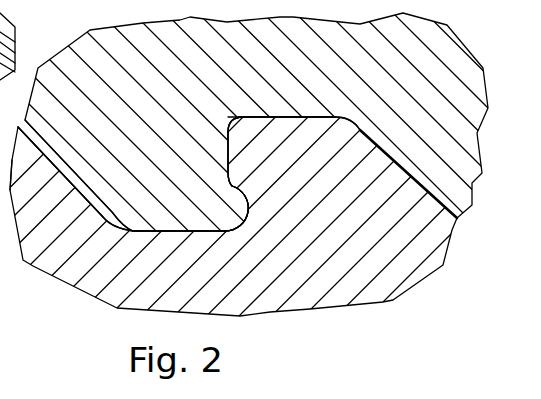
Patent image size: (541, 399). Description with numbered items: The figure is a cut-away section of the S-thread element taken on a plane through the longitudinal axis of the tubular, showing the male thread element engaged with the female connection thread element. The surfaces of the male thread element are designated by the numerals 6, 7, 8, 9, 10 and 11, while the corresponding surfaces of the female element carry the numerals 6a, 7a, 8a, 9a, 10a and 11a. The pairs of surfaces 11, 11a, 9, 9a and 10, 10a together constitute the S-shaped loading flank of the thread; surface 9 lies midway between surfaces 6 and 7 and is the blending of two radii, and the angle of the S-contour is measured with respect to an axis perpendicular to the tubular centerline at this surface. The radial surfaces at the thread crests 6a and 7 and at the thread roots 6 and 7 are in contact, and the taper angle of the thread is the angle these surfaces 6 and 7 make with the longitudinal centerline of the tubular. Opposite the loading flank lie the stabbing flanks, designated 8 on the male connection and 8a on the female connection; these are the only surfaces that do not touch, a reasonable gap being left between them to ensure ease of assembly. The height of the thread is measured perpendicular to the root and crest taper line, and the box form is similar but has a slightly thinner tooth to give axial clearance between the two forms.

The thread root surface of male thread element 6 is at (198, 232).
The thread crest surface of female thread element 6a is at (186, 231).
The thread crest surface of male thread element 7 is at (322, 132).
The thread surface of female thread element 7a is at (308, 117).
The stabbing flank of male thread element 8 is at (60, 168).
The stabbing flank of female thread element 8a is at (72, 167).
The loading flank mid surface of male thread element 9 is at (233, 165).
The loading flank mid surface of female thread element 9a is at (230, 175).
The loading flank surface of male thread element 10 is at (229, 133).
The loading flank surface of female thread element 10a is at (241, 121).
The loading flank surface of male thread element 11 is at (241, 222).
The loading flank surface of female thread element 11a is at (238, 222).